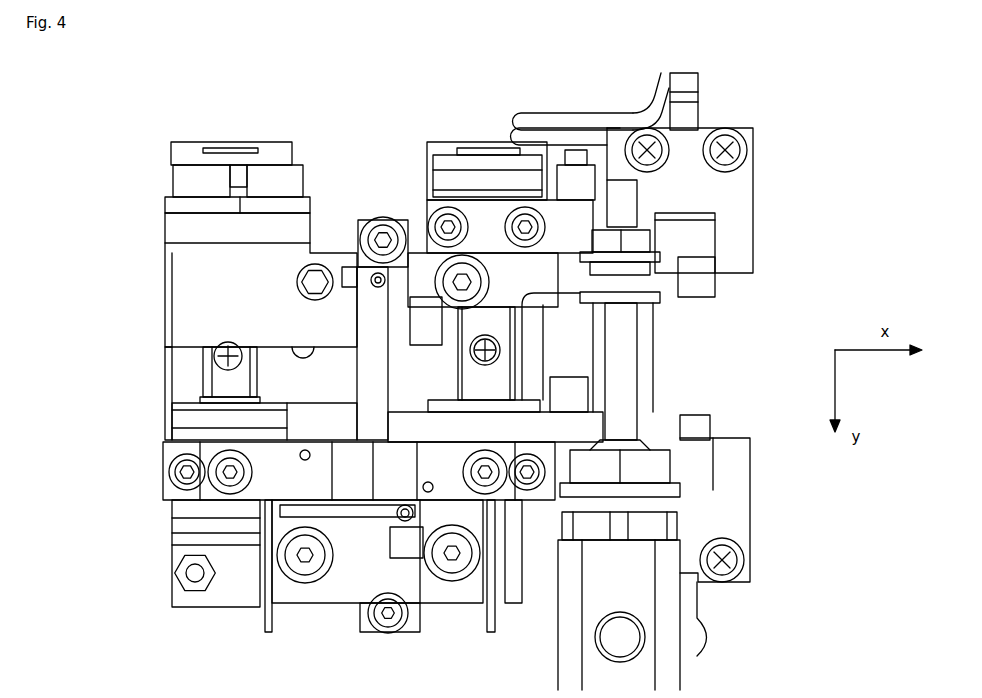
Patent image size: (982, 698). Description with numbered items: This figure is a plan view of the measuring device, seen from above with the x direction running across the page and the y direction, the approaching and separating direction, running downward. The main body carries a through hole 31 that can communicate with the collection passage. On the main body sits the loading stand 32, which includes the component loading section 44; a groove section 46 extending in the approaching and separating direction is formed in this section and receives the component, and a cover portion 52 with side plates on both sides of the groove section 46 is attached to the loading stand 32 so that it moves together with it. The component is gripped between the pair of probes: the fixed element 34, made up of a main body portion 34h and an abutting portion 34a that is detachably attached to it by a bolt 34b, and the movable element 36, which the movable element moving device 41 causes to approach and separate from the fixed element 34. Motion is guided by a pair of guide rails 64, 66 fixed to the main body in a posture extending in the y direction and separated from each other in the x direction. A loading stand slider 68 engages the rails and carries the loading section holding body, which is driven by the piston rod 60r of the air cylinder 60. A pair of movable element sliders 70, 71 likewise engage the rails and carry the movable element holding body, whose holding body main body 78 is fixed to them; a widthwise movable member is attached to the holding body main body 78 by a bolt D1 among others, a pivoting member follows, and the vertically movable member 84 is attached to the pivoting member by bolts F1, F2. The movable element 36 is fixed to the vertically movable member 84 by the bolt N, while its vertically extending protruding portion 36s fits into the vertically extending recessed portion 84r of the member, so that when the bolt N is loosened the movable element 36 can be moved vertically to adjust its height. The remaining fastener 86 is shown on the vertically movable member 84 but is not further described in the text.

The movable element slider 70 is at (172, 153).
The bolt F1 is at (274, 180).
The bolt F2 is at (205, 180).
The vertically movable member 84 is at (188, 292).
The hex bolt 86 is at (296, 278).
The recessed portion 84r is at (355, 297).
The protruding portion 36s is at (360, 262).
The movable element 36 is at (372, 370).
The guide rail 64 is at (228, 380).
The loading stand slider 68 is at (195, 418).
The through hole 31 is at (343, 415).
The groove section 46 is at (340, 472).
The loading stand 32 is at (210, 514).
The fixed element 34 is at (420, 633).
The abutting portion 34a is at (270, 556).
The bolt 34b is at (390, 533).
The main body portion 34h is at (403, 522).
The component loading section 44 is at (492, 578).
The cover portion 52 is at (478, 628).
The movable element slider 71 is at (454, 158).
The holding body main body 78 is at (479, 213).
The bolt D1 is at (430, 213).
The bolt N is at (428, 325).
The guide rail 66 is at (497, 323).
The piston rod 60r is at (620, 390).
The air cylinder 60 is at (642, 607).
The movable element moving device 41 is at (730, 652).